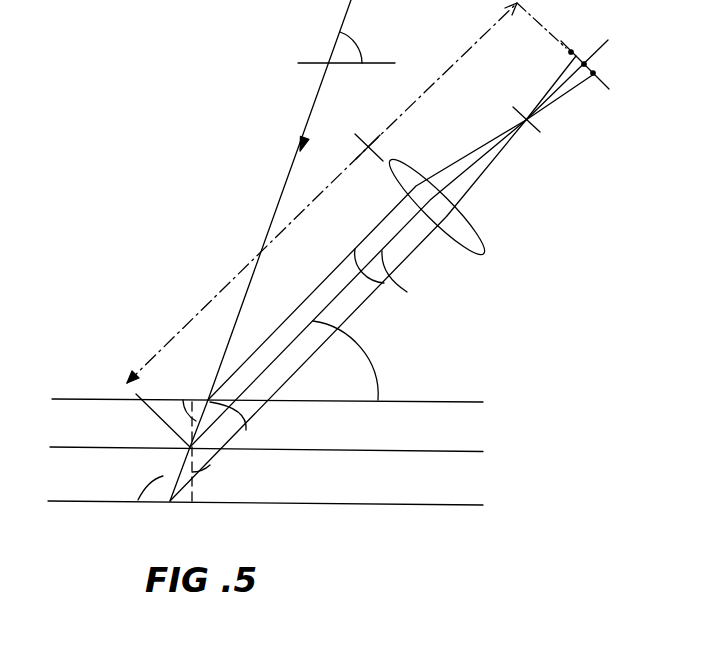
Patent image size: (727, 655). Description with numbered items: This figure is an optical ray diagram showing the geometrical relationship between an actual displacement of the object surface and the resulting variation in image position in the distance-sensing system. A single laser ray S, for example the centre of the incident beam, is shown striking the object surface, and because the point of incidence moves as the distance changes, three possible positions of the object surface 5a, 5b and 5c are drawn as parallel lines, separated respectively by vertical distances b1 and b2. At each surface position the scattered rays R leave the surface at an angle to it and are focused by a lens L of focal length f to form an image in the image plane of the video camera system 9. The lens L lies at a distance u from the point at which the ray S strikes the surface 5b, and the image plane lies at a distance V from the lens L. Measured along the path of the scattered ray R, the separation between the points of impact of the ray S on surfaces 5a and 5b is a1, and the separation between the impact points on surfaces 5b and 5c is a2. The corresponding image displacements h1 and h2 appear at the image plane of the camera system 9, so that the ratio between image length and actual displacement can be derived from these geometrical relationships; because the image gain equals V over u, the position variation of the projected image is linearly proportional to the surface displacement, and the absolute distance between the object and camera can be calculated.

The object surface position 5a is at (463, 402).
The object surface position 5b is at (465, 452).
The object surface position 5c is at (468, 505).
The laser ray S is at (283, 187).
The lens-to-surface distance u is at (247, 297).
The lens-to-image-plane distance V is at (460, 82).
The scattered rays R is at (405, 268).
The lens L is at (481, 238).
The focal length f is at (505, 130).
The video camera system 9 is at (608, 92).
The image length h2 is at (584, 44).
The image length h1 is at (613, 67).
The vertical distance b1 is at (185, 399).
The impact-point distance a1 is at (246, 423).
The impact-point distance a2 is at (163, 476).
The vertical distance b2 is at (212, 466).